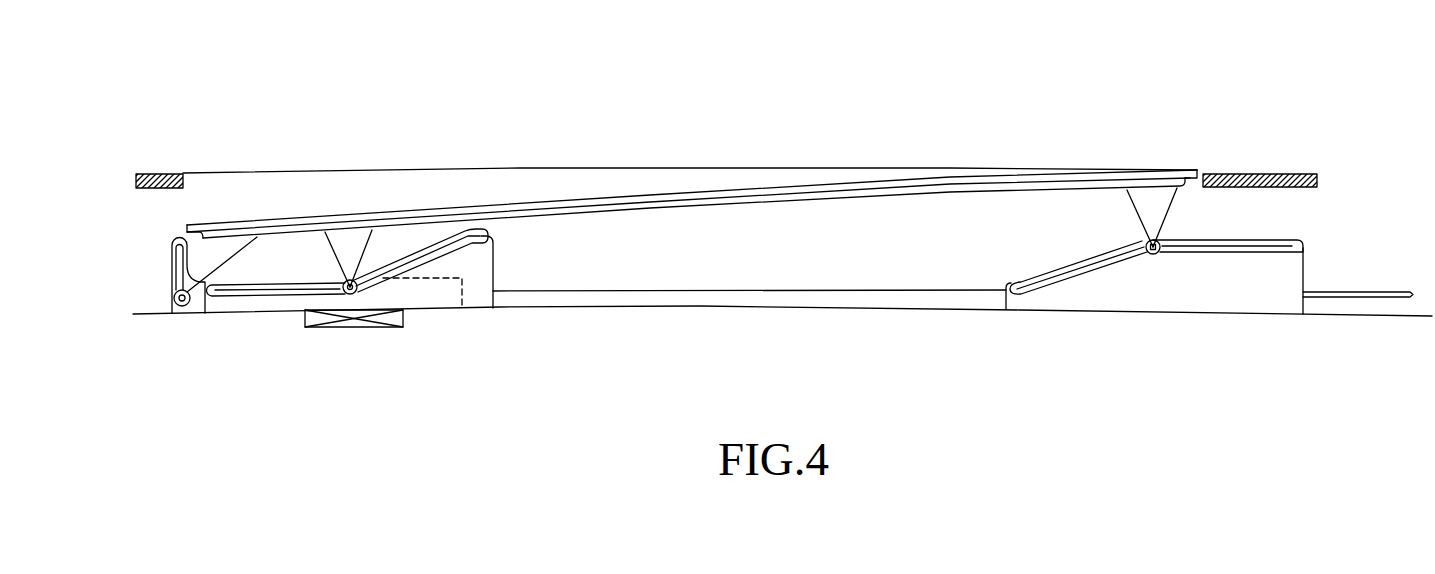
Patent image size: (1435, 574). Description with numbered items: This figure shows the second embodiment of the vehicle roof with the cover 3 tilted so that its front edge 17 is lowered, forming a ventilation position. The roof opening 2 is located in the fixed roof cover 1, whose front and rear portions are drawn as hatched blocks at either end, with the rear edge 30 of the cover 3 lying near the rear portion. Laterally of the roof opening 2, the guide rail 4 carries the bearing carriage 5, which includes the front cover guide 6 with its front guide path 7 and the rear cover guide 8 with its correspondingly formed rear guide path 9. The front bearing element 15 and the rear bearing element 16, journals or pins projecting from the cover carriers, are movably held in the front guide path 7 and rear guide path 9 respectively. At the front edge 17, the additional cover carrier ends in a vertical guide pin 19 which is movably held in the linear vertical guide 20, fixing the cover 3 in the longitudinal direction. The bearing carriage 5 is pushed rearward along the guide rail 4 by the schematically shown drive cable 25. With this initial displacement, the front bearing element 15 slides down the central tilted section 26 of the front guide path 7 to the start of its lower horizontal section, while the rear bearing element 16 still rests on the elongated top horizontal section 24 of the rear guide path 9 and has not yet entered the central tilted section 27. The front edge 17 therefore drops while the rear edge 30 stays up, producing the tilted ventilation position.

The fixed roof cover 1 is at (160, 165).
The roof opening 2 is at (400, 192).
The cover 3 is at (740, 192).
The guide rail 4 is at (598, 320).
The bearing carriage 5 is at (728, 296).
The front cover guide 6 is at (485, 302).
The front guide path 7 is at (247, 306).
The rear cover guide 8 is at (1200, 302).
The rear guide path 9 is at (1177, 265).
The front bearing element 15 is at (350, 294).
The rear bearing element 16 is at (1150, 256).
The front edge 17 is at (202, 195).
The vertical guide pin 19 is at (183, 311).
The linear vertical guide 20 is at (178, 268).
The top horizontal section of the rear guide path 24 is at (1252, 254).
The drive cable 25 is at (1380, 300).
The central tilted section of the front guide path 26 is at (440, 256).
The central tilted section of the rear guide path 27 is at (1082, 274).
The rear edge 30 is at (1209, 157).